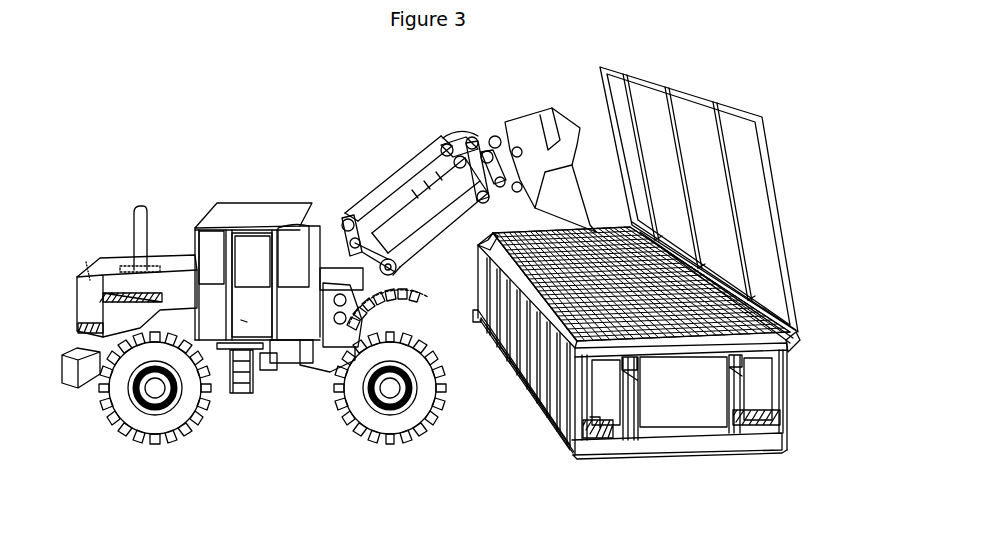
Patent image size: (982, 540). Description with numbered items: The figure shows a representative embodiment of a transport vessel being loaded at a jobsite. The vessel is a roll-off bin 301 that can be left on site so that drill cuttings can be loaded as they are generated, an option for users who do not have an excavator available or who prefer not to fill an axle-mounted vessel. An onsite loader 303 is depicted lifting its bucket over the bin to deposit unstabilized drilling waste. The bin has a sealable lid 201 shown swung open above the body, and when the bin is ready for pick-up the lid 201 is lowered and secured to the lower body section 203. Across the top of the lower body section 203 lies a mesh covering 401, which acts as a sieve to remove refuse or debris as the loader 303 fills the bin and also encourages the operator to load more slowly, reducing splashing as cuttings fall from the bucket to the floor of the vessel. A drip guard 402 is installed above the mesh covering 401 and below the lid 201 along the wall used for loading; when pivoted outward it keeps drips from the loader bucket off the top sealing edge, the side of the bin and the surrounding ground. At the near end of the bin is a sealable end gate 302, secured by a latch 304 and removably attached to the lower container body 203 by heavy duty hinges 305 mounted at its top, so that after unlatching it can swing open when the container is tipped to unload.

The sealable lid 201 is at (797, 283).
The lower body section 203 is at (545, 419).
The roll-off bin 301 is at (483, 414).
The sealable end gate 302 is at (686, 408).
The onsite loader 303 is at (254, 404).
The latch 304 is at (603, 433).
The heavy duty hinge 305 is at (744, 367).
The mesh covering 401 is at (655, 320).
The drip guard 402 is at (489, 249).